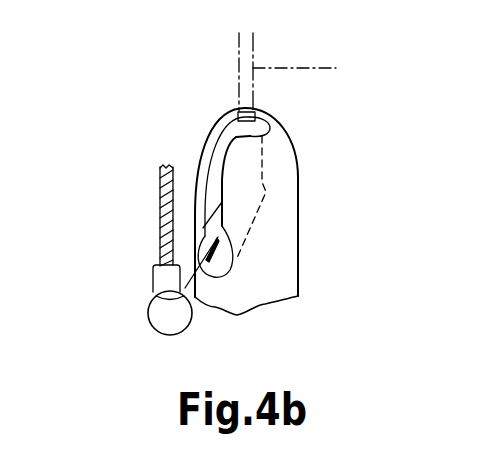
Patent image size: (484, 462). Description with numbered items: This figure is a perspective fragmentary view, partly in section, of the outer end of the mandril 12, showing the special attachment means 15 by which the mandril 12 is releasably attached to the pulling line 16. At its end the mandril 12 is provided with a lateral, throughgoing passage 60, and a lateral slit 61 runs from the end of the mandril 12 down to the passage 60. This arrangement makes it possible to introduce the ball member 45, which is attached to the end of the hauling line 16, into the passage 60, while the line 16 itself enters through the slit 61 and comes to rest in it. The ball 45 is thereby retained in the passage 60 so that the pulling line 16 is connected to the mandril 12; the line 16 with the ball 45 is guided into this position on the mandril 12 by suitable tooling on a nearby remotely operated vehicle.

The mandril 12 is at (285, 252).
The means for releasable attachment 15 is at (209, 126).
The pulling line 16 is at (163, 199).
The ball member 45 is at (150, 313).
The lateral throughgoing passage 60 is at (250, 197).
The lateral slit 61 is at (220, 151).